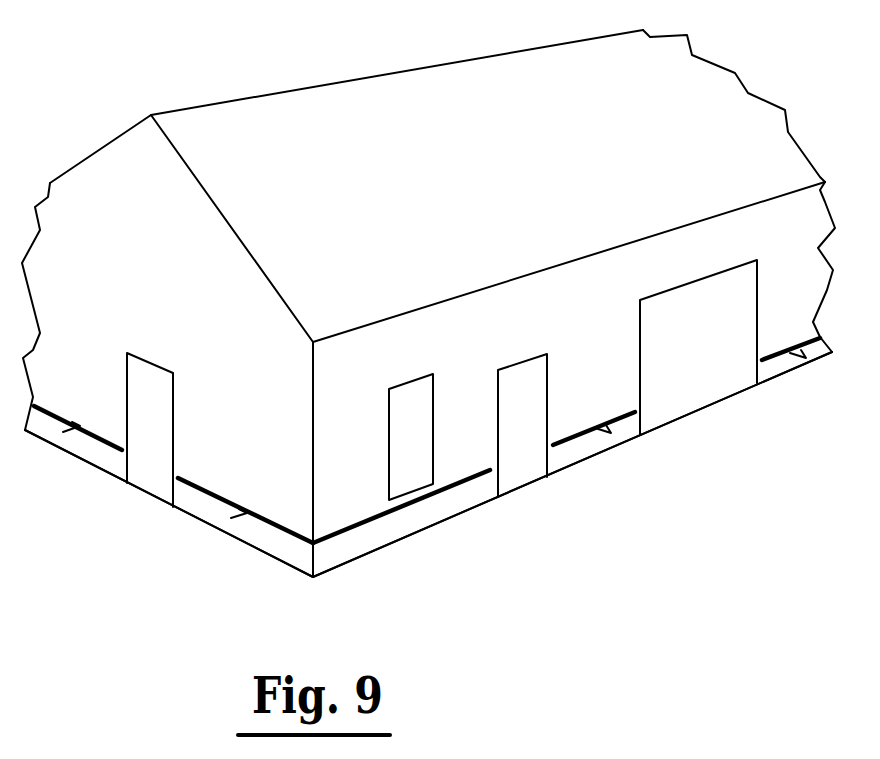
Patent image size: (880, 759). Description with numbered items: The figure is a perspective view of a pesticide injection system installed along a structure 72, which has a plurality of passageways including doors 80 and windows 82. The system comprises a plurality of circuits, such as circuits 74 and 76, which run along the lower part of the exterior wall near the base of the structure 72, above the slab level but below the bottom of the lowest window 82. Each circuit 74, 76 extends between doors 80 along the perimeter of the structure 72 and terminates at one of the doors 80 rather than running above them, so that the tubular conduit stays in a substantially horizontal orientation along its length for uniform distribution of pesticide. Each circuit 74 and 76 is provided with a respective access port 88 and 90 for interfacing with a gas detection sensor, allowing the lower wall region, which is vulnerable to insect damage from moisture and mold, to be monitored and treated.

The structure 72 is at (397, 546).
The circuit 74 is at (276, 530).
The circuit 76 is at (567, 444).
The doors 80 is at (154, 364).
The windows 82 is at (436, 394).
The access port 88 is at (236, 518).
The access port 90 is at (607, 433).